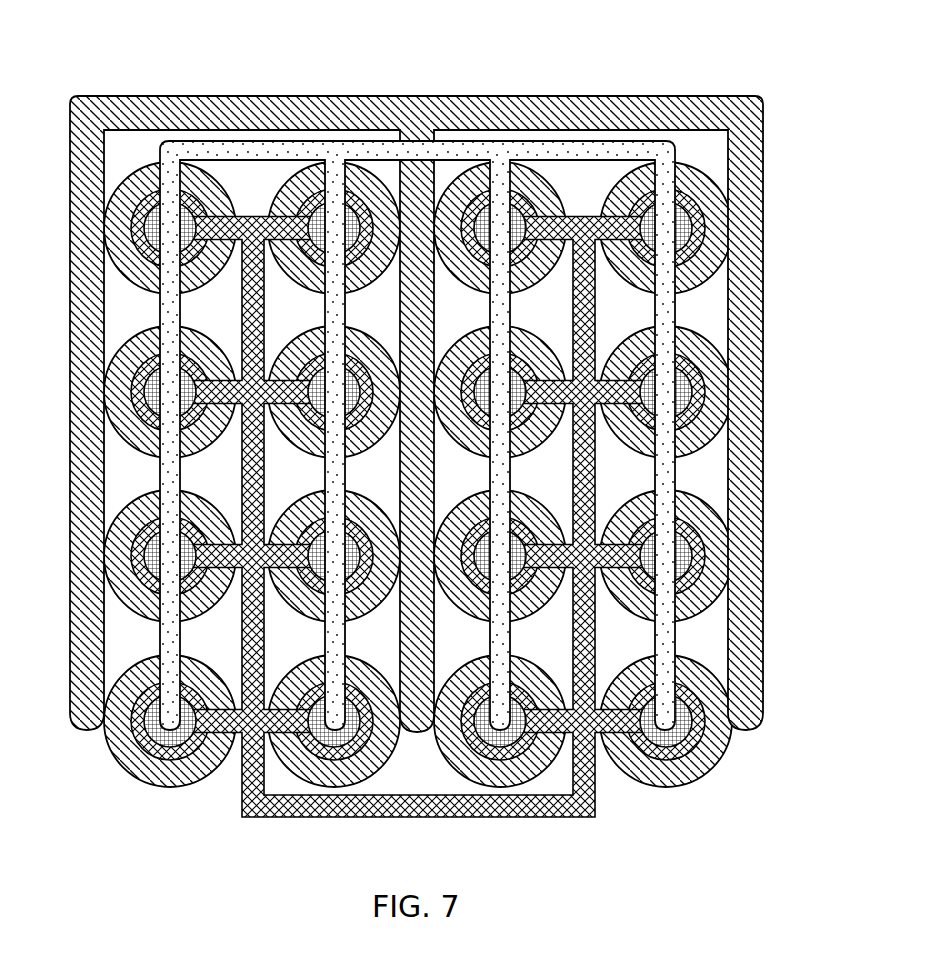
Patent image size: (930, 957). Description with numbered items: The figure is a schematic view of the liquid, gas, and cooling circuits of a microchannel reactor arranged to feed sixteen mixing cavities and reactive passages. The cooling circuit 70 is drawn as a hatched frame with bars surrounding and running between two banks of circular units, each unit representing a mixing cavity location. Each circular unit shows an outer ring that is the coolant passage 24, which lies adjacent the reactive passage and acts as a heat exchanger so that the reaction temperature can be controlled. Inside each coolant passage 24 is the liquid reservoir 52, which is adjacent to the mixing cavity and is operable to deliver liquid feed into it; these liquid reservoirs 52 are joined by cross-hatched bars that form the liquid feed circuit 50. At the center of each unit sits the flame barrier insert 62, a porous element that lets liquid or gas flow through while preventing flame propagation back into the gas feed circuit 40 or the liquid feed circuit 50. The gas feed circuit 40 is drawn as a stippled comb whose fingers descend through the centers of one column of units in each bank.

The coolant feed circuit 70 is at (576, 79).
The gas feed circuit 40 is at (683, 148).
The liquid feed circuit 50 is at (553, 828).
The coolant passage 24 is at (137, 182).
The liquid reservoir 52 is at (128, 211).
The flame barrier insert 62 is at (150, 236).